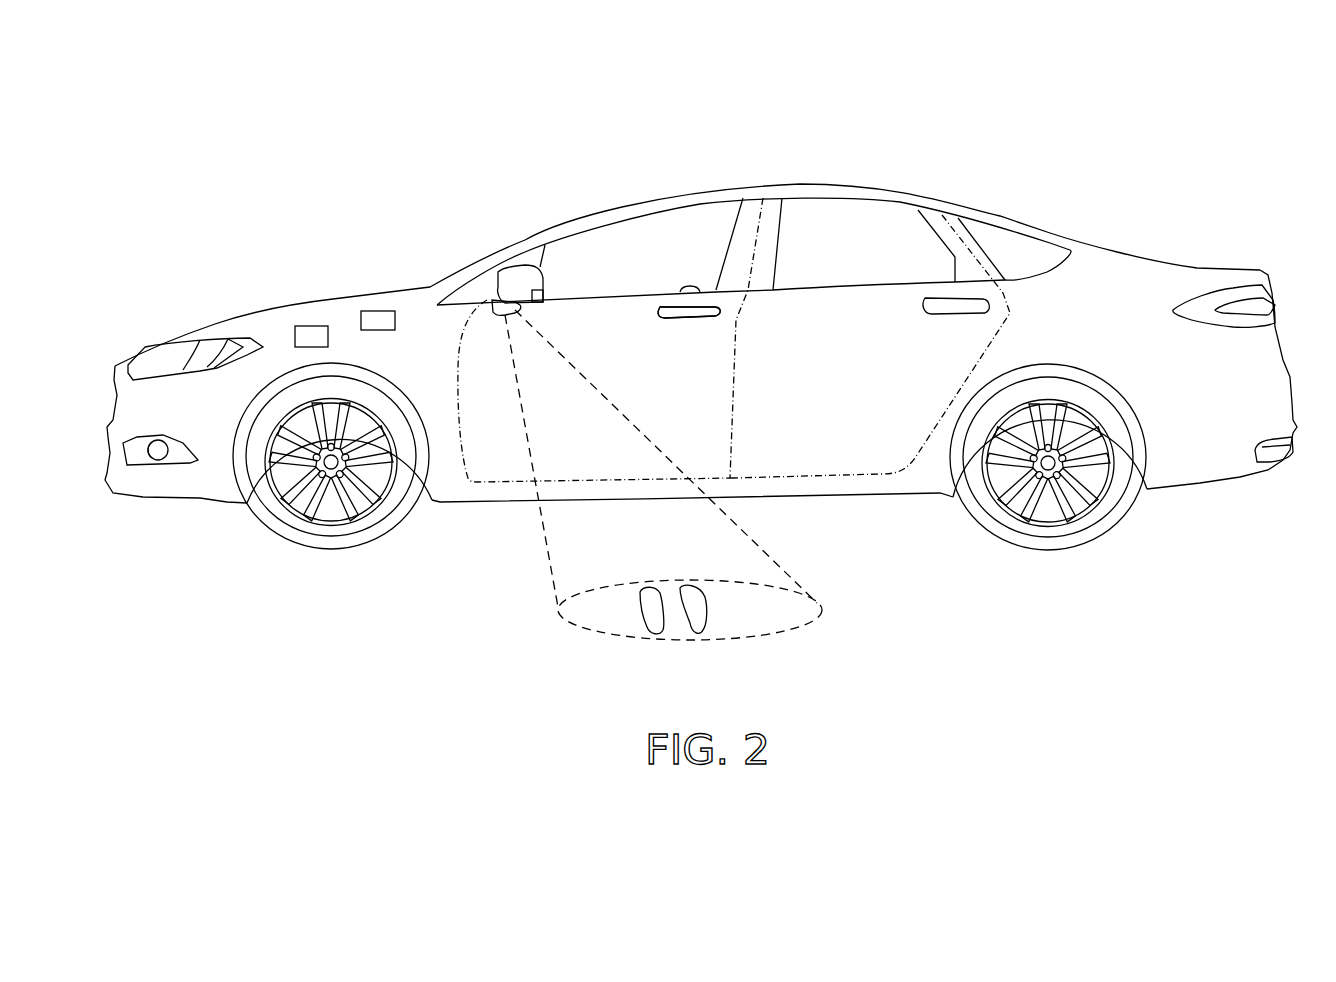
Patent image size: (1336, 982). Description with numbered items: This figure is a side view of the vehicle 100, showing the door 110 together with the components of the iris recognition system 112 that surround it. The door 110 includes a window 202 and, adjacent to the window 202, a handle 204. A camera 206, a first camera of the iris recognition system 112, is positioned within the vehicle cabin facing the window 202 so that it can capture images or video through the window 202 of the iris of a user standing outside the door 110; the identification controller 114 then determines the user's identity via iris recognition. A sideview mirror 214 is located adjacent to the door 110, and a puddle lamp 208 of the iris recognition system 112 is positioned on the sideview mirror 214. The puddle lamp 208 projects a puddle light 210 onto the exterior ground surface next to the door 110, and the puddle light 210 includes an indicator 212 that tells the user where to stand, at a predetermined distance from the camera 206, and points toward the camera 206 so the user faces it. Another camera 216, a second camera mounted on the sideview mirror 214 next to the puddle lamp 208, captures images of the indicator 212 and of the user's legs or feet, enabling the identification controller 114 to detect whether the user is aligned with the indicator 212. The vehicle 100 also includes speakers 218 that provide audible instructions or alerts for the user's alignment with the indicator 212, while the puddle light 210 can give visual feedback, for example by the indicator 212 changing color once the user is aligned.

The vehicle 100 is at (1216, 269).
The door 110 is at (494, 460).
The iris recognition system 112 is at (495, 148).
The identification controller 114 is at (376, 310).
The window 202 is at (597, 240).
The handle 204 is at (667, 320).
The camera 206 is at (687, 286).
The puddle lamp 208 is at (492, 304).
The puddle light 210 is at (815, 612).
The indicator 212 is at (632, 619).
The sideview mirror 214 is at (524, 266).
The camera 216 is at (540, 303).
The speakers 218 is at (310, 325).